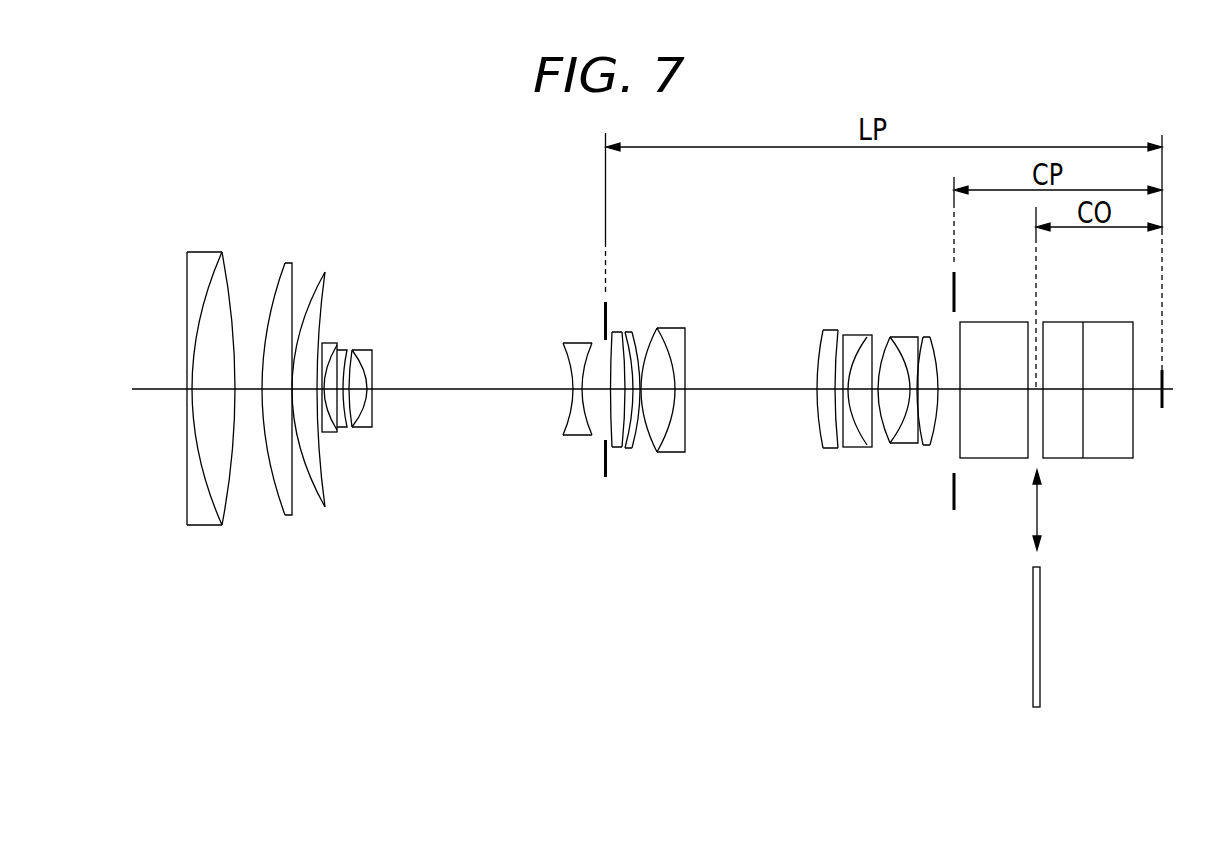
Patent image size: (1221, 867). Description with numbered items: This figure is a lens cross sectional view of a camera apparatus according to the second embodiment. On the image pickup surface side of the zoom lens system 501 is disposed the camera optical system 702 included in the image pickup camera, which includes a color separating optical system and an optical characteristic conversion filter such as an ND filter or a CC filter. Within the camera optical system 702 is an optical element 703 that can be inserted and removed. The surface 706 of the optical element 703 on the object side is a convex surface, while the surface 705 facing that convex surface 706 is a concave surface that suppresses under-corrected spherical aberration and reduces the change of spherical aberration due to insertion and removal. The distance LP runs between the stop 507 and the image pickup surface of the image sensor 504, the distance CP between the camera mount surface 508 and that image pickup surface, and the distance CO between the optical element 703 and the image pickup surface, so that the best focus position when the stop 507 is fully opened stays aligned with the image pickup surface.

The zoom lens system 501 is at (945, 537).
The stop 507 is at (603, 465).
The camera mount surface 508 is at (953, 500).
The surface facing the convex surface 705 is at (1028, 417).
The image sensor 504 is at (1162, 408).
The camera optical system 702 is at (1043, 558).
The surface of the optical element on the object side 706 is at (997, 655).
The optical element 703 is at (1036, 655).